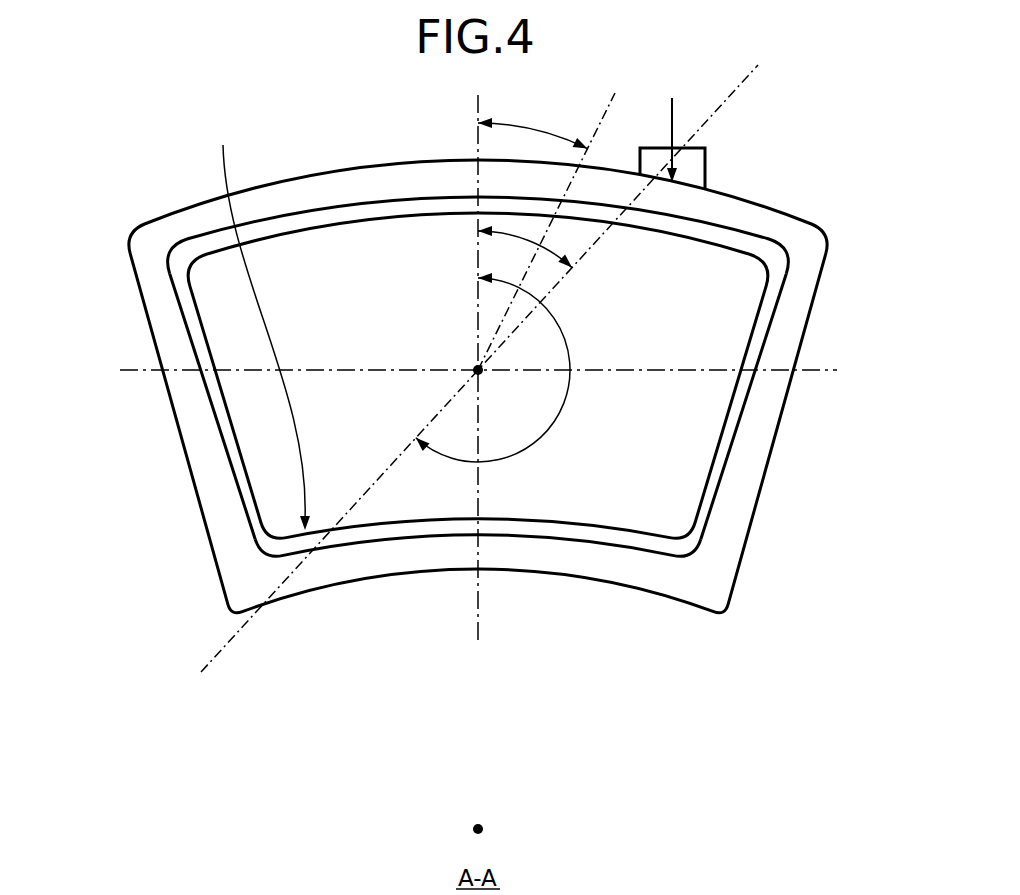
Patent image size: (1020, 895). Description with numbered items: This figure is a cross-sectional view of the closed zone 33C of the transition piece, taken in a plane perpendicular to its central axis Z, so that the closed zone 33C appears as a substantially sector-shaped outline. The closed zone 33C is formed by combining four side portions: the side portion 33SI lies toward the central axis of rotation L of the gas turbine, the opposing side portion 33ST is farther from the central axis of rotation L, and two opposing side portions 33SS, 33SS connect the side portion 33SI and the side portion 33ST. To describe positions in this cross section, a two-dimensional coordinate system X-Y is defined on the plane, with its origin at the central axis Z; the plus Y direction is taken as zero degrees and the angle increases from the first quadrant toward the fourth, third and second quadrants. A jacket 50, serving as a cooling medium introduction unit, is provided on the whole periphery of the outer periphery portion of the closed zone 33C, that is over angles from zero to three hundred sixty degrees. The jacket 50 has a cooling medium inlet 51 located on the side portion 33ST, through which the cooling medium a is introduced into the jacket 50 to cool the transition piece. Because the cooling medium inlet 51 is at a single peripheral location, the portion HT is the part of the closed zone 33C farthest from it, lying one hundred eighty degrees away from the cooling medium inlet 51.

The jacket 50 is at (788, 212).
The cooling medium inlet 51 is at (706, 162).
The cooling medium a is at (672, 125).
The closed zone 33C is at (128, 123).
The side portion 33ST is at (383, 186).
The side portion 33SS is at (790, 314).
The side portion 33SI is at (435, 548).
The portion HT is at (259, 323).
The X axis X is at (490, 372).
The Y axis Y is at (499, 351).
The central axis Z is at (470, 362).
The central axis of rotation L is at (494, 829).